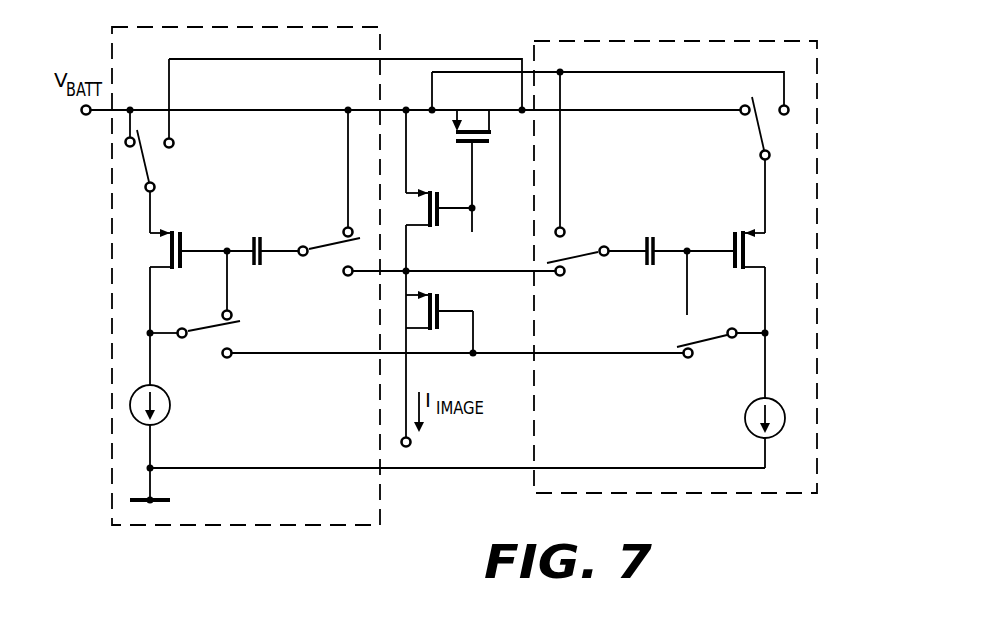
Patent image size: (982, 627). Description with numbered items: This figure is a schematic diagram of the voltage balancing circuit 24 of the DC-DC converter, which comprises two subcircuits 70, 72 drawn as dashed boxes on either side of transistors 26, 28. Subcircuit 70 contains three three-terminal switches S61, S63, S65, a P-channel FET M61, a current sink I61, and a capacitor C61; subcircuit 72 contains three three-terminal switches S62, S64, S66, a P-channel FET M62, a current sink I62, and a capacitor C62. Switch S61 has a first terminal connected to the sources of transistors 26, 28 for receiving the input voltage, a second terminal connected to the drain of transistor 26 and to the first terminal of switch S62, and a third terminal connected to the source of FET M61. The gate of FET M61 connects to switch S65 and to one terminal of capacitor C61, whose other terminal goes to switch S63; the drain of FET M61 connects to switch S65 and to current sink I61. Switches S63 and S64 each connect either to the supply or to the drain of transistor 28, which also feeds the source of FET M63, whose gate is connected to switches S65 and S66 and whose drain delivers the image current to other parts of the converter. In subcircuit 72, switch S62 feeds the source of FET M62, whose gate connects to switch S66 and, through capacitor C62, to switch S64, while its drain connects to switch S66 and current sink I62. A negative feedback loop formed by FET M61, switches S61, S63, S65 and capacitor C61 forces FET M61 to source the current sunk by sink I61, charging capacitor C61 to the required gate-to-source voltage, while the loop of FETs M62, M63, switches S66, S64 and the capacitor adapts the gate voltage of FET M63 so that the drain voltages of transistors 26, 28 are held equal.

The subcircuit 70 is at (348, 27).
The subcircuit 72 is at (743, 41).
The voltage balancing circuit 24 is at (746, 542).
The transistor 26 is at (489, 142).
The transistor 28 is at (431, 193).
The three-terminal switch S61 is at (155, 165).
The three-terminal switch S62 is at (753, 128).
The three-terminal switch S63 is at (325, 258).
The three-terminal switch S64 is at (577, 243).
The three-terminal switch S65 is at (207, 320).
The three-terminal switch S66 is at (705, 325).
The P-channel FET M61 is at (181, 232).
The P-channel FET M62 is at (758, 250).
The P-channel FET M63 is at (440, 295).
The capacitor C61 is at (266, 238).
The capacitor C62 is at (657, 238).
The current sink I61 is at (172, 404).
The current sink I62 is at (747, 413).